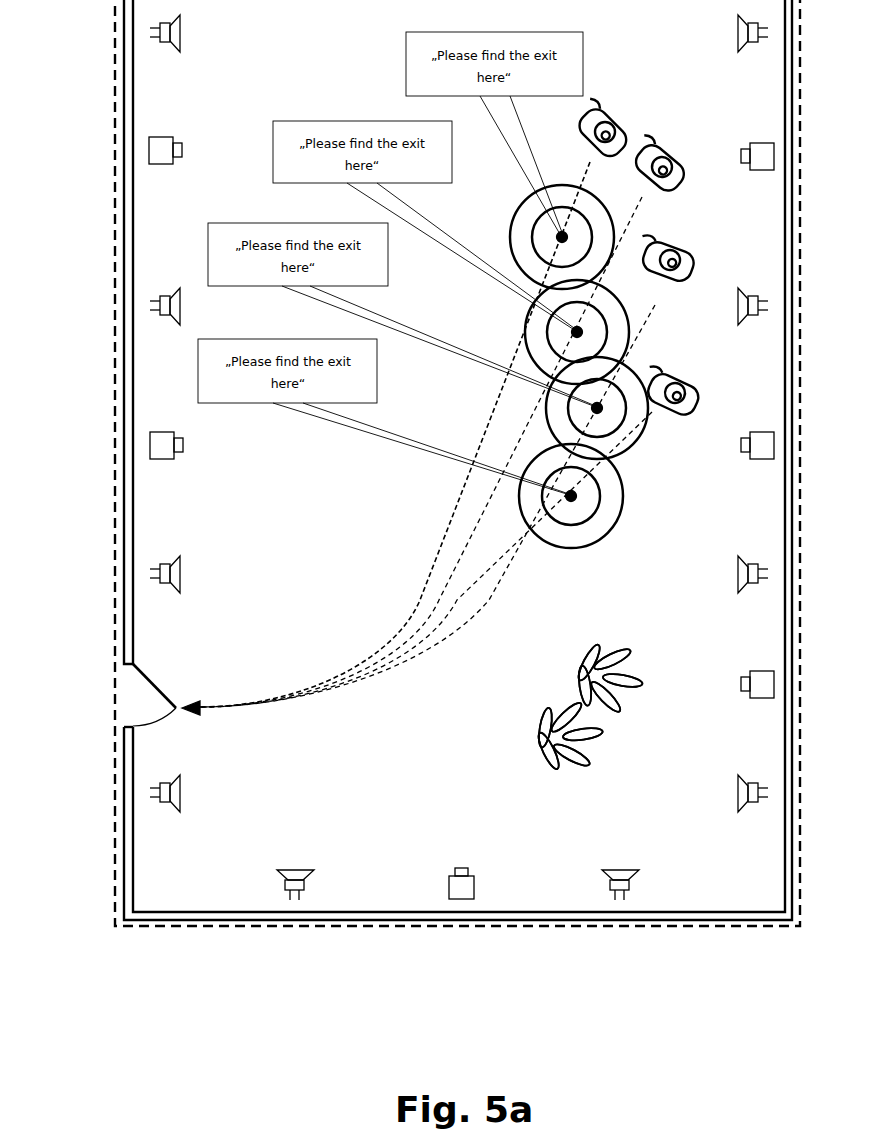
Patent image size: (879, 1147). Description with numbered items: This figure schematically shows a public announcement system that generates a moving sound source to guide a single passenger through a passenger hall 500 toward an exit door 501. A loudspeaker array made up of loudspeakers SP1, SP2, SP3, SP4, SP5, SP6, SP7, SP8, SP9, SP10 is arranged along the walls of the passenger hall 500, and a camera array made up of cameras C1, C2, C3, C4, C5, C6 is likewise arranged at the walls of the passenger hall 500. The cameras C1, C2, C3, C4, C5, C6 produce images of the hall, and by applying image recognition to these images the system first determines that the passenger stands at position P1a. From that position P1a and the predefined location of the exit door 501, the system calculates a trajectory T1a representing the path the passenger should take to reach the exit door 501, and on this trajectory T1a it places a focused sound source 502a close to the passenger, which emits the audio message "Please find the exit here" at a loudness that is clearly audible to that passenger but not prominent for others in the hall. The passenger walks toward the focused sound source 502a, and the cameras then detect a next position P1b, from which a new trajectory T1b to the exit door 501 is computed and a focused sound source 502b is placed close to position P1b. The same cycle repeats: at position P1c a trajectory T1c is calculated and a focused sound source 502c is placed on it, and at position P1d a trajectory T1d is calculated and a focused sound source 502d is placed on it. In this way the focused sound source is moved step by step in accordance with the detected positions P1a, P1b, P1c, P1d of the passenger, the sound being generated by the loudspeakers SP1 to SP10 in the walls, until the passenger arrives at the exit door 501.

The passenger hall 500 is at (355, 926).
The exit door 501 is at (143, 690).
The focused sound source 502a is at (558, 237).
The focused sound source 502b is at (573, 332).
The focused sound source 502c is at (600, 409).
The focused sound source 502d is at (572, 498).
The position of passenger P1 P1a is at (602, 122).
The position of passenger P1 P1b is at (659, 154).
The position of passenger P1 P1c is at (668, 271).
The position of passenger P1 P1d is at (670, 411).
The trajectory T1a is at (480, 445).
The trajectory T1b is at (465, 523).
The trajectory T1c is at (503, 560).
The trajectory T1d is at (470, 600).
The loudspeaker SP1 is at (164, 47).
The loudspeaker SP2 is at (164, 320).
The loudspeaker SP3 is at (164, 588).
The loudspeaker SP4 is at (164, 807).
The loudspeaker SP5 is at (315, 885).
The loudspeaker SP6 is at (640, 885).
The loudspeaker SP7 is at (752, 807).
The loudspeaker SP8 is at (752, 588).
The loudspeaker SP9 is at (752, 320).
The loudspeaker SP10 is at (750, 47).
The camera C1 is at (165, 164).
The camera C2 is at (166, 459).
The camera C3 is at (479, 885).
The camera C4 is at (757, 698).
The camera C5 is at (757, 459).
The camera C6 is at (757, 171).